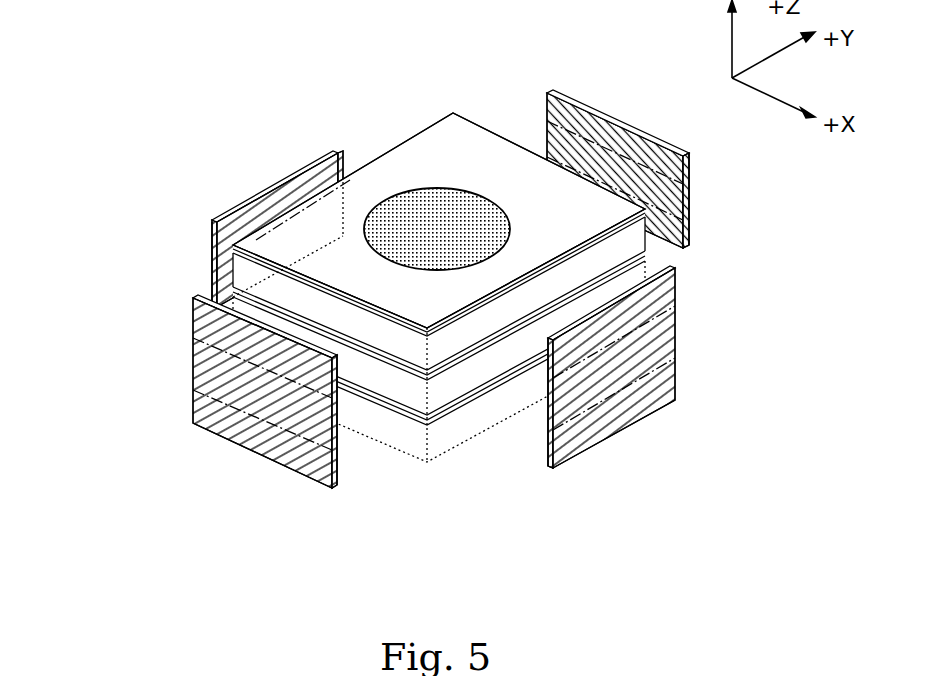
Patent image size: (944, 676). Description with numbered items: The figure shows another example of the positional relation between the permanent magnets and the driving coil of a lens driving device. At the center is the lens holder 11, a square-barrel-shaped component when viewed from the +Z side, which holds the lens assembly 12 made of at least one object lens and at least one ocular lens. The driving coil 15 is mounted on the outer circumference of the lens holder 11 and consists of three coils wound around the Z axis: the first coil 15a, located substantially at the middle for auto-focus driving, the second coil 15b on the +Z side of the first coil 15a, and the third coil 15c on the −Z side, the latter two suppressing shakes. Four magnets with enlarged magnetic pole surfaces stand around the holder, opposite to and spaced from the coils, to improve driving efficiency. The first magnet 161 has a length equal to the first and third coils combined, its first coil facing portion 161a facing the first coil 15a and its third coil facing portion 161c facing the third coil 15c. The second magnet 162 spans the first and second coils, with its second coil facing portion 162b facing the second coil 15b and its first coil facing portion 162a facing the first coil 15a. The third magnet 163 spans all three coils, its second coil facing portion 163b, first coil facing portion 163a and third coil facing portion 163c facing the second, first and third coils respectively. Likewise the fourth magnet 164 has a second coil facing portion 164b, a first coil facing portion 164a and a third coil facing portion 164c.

The lens holder 11 is at (420, 147).
The lens assembly 12 is at (417, 198).
The driving coil 15 is at (439, 363).
The first coil 15a is at (403, 397).
The second coil 15b is at (410, 348).
The third coil 15c is at (408, 443).
The first magnet 161 is at (115, 233).
The first coil facing portion 161a is at (212, 235).
The third coil facing portion 161c is at (212, 278).
The second magnet 162 is at (798, 198).
The first coil facing portion 162a is at (686, 233).
The second coil facing portion 162b is at (688, 188).
The third magnet 163 is at (790, 313).
The first coil facing portion 163a is at (640, 333).
The second coil facing portion 163b is at (642, 297).
The third coil facing portion 163c is at (640, 378).
The fourth magnet 164 is at (82, 387).
The first coil facing portion 164a is at (230, 385).
The second coil facing portion 164b is at (233, 363).
The third coil facing portion 164c is at (235, 420).